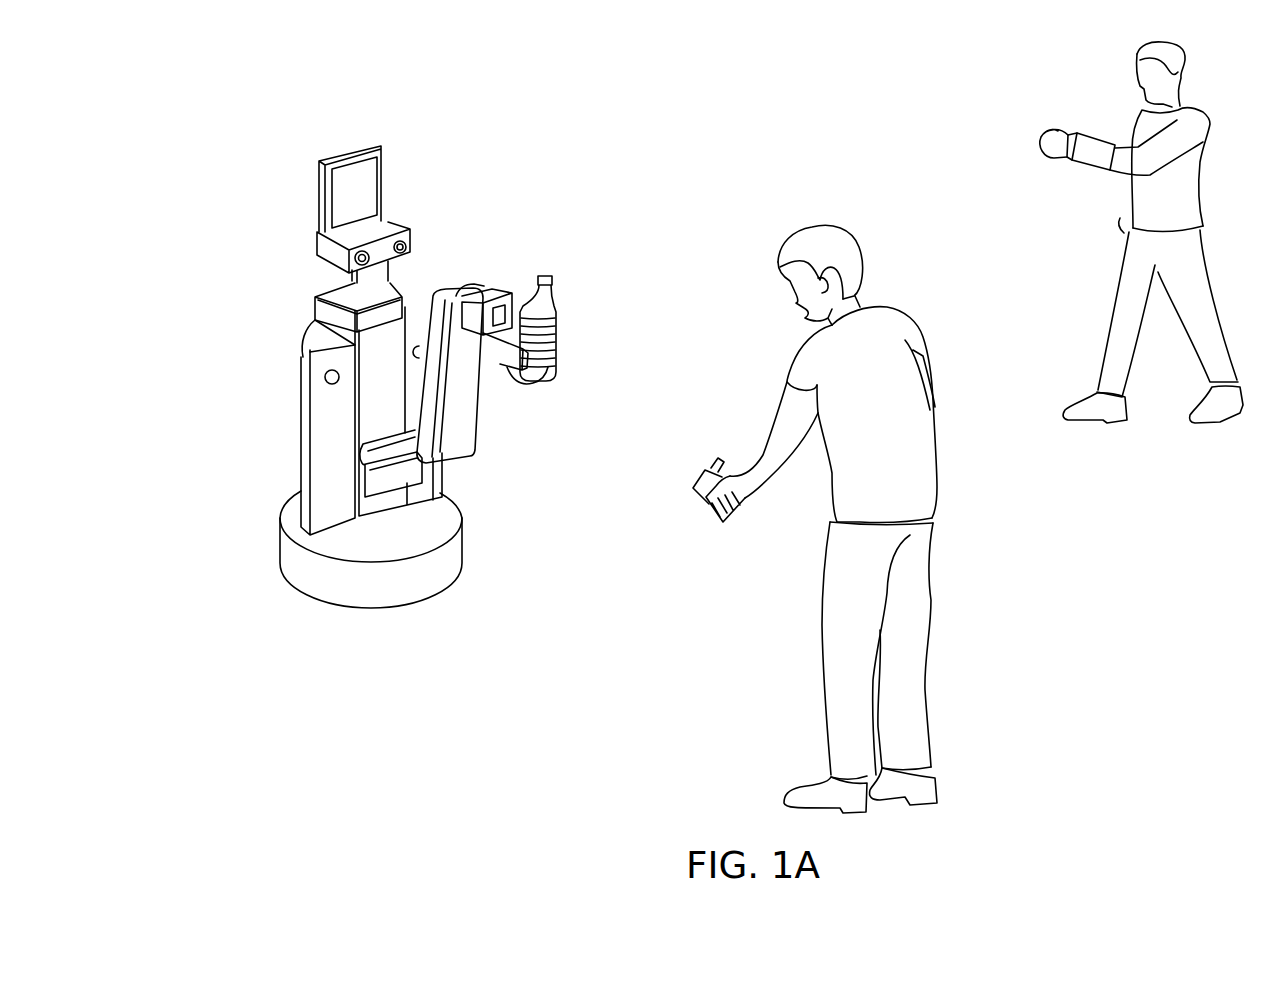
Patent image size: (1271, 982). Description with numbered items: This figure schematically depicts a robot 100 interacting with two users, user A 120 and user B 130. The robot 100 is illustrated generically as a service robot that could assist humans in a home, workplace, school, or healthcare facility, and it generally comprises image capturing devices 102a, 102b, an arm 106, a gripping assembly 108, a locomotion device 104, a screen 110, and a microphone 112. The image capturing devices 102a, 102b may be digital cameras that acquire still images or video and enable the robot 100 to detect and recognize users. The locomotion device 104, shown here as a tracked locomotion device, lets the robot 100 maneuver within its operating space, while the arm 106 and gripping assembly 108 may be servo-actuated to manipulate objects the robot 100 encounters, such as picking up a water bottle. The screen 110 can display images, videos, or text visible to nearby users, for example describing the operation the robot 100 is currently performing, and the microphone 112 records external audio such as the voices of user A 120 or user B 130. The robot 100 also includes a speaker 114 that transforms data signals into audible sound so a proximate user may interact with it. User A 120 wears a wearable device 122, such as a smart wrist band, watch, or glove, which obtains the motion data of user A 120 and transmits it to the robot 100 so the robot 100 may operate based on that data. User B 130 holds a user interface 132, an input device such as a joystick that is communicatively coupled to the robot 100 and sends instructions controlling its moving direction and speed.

The robot 100 is at (292, 472).
The image capturing device 102a is at (354, 259).
The image capturing device 102b is at (406, 244).
The locomotion device 104 is at (463, 550).
The arm 106 is at (468, 290).
The gripping assembly 108 is at (506, 350).
The screen 110 is at (384, 173).
The microphone 112 is at (414, 344).
The speaker 114 is at (325, 378).
The user A 120 is at (1205, 114).
The wearable device 122 is at (1093, 132).
The user B 130 is at (905, 312).
The user interface 132 is at (706, 472).